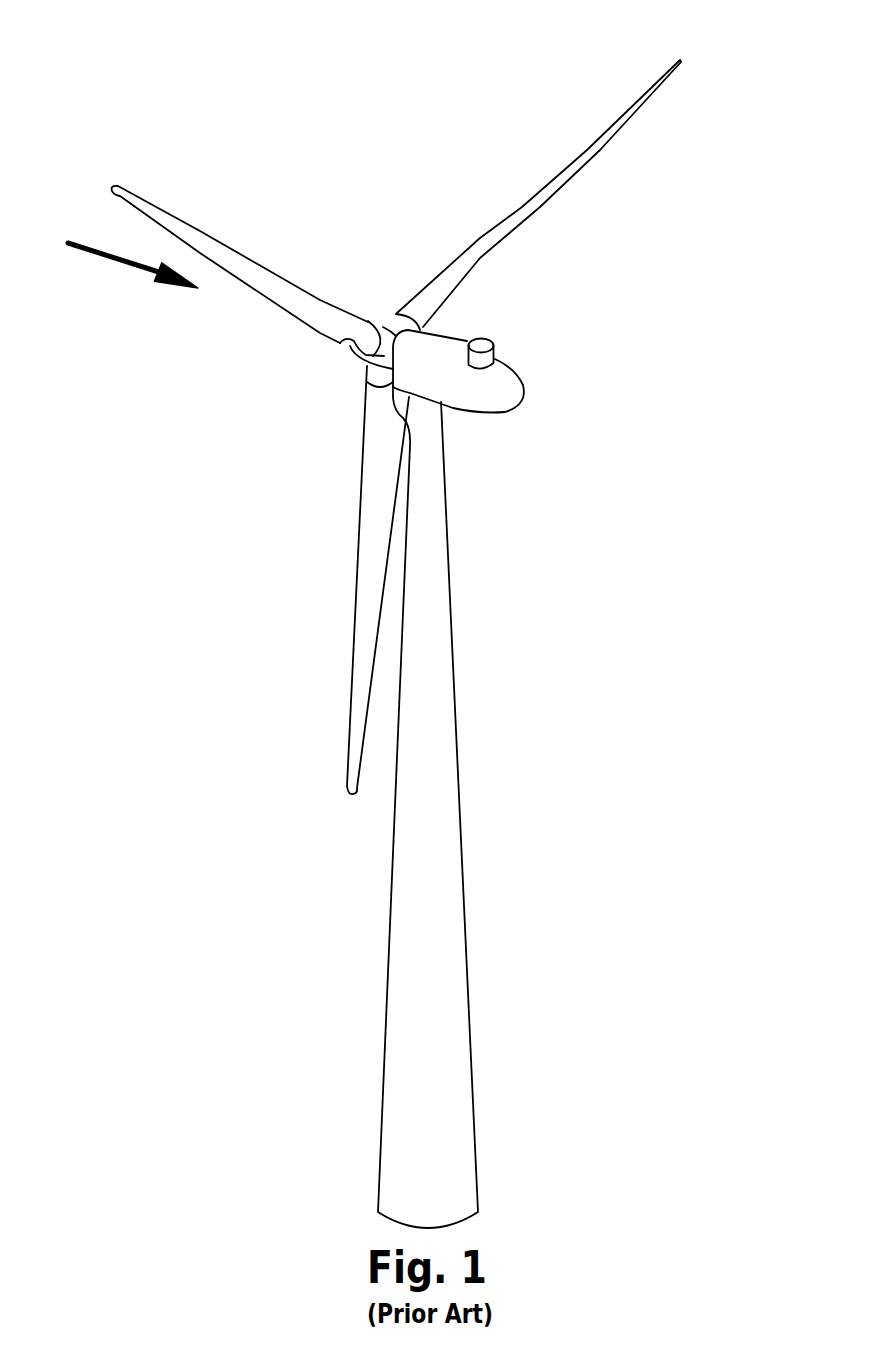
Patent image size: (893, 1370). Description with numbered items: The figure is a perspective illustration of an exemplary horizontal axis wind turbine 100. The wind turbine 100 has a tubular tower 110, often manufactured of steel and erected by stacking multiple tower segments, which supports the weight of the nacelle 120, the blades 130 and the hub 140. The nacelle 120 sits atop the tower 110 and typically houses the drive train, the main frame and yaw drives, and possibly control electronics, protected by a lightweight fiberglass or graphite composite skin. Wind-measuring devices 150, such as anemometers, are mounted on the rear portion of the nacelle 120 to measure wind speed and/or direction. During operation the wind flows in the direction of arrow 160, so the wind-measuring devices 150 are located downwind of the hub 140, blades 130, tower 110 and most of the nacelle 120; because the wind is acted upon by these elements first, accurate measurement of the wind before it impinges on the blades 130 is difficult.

The wind turbine 100 is at (545, 70).
The tubular tower 110 is at (433, 767).
The nacelle 120 is at (488, 403).
The blades 130 is at (276, 286).
The hub 140 is at (380, 356).
The wind-measuring devices 150 is at (488, 343).
The arrow 160 is at (118, 266).